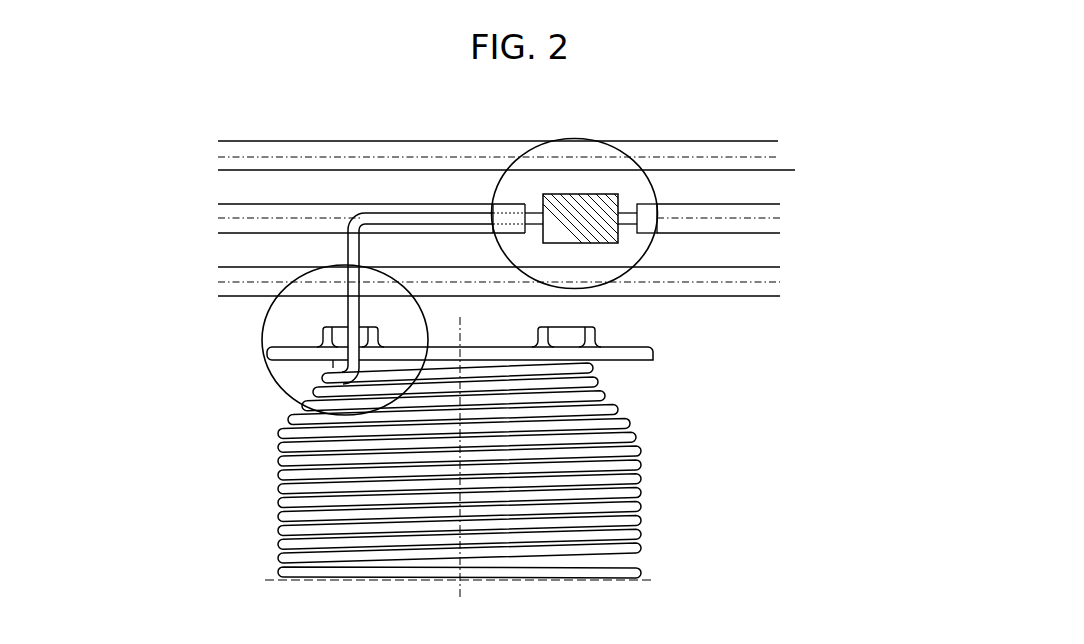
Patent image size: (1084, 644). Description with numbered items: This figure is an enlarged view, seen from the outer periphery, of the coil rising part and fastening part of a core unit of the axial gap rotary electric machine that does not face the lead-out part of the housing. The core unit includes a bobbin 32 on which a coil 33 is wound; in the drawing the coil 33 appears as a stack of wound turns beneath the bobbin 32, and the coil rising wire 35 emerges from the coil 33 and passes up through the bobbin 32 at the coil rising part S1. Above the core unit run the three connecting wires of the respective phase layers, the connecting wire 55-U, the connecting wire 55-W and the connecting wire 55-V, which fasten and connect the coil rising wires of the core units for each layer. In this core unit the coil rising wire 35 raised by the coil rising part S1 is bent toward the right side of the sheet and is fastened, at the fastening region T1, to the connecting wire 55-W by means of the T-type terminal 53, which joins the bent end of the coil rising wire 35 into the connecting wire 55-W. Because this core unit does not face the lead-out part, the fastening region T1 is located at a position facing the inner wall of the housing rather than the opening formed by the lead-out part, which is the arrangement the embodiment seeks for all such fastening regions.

The bobbin 32 is at (653, 353).
The coil 33 is at (638, 494).
The coil rising wire 35 is at (348, 311).
The T-type terminal 53 is at (595, 195).
The connecting wire of the U layer 55-U is at (536, 153).
The connecting wire of the W layer 55-W is at (542, 218).
The connecting wire of the V layer 55-V is at (540, 284).
The fastening region T1 is at (560, 214).
The coil rising part S1 is at (330, 341).